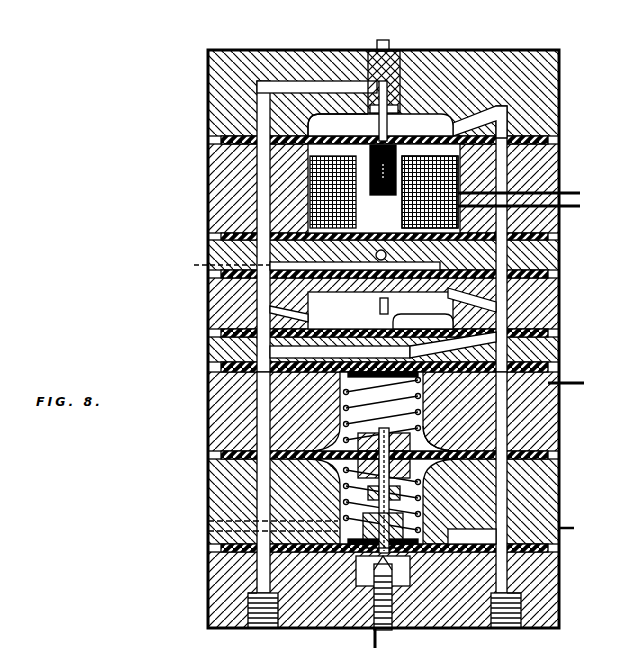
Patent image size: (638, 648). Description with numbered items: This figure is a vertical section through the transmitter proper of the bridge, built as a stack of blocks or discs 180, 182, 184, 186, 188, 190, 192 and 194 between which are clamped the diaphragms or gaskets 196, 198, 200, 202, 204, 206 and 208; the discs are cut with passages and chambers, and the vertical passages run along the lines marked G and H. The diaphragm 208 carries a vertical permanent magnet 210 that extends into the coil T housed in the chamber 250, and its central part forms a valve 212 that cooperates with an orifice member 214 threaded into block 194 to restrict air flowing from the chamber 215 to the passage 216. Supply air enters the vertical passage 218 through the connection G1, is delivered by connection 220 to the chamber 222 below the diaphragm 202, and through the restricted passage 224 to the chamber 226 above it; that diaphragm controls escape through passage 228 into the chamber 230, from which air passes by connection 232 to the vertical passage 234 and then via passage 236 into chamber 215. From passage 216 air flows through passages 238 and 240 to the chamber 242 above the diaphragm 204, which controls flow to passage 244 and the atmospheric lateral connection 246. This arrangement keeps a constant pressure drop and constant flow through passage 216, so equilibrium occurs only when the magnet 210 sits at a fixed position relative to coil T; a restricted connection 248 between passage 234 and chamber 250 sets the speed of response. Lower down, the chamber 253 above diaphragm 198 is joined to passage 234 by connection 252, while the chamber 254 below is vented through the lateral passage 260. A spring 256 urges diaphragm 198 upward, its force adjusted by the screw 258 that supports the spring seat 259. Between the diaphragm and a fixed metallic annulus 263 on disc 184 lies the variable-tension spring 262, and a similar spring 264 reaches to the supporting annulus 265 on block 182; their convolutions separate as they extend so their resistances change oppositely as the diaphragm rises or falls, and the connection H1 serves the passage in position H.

The block 194 is at (552, 82).
The block 192 is at (552, 170).
The block 190 is at (552, 249).
The block 188 is at (552, 295).
The block 186 is at (552, 350).
The block 184 is at (552, 428).
The block 182 is at (552, 482).
The block 180 is at (552, 576).
The diaphragm 208 is at (552, 125).
The diaphragm 206 is at (552, 226).
The diaphragm 204 is at (552, 266).
The diaphragm 202 is at (552, 324).
The diaphragm 200 is at (572, 378).
The diaphragm 198 is at (552, 447).
The diaphragm 196 is at (552, 540).
The passage 240 is at (249, 102).
The vertical passage 218 is at (249, 490).
The passage 238 is at (292, 74).
The restricted connection 248 is at (499, 160).
The vertical passage 234 is at (499, 490).
The passage 236 is at (466, 108).
The orifice member 214 is at (388, 84).
The chamber 215 is at (392, 101).
The permanent magnet 210 is at (380, 125).
The valve 212 is at (338, 125).
The passage 216 is at (375, 42).
The chamber 250 is at (302, 160).
The coil T is at (452, 152).
The chamber 242 is at (420, 258).
The passage 244 is at (379, 247).
The lateral connection 246 is at (218, 265).
The chamber 230 is at (380, 310).
The restricted passage 224 is at (294, 307).
The chamber 226 is at (423, 311).
The passage 228 is at (399, 303).
The connection 232 is at (472, 307).
The connection 220 is at (340, 353).
The chamber 222 is at (453, 347).
The chamber 253 is at (302, 441).
The chamber 254 is at (396, 501).
The connection 252 is at (440, 420).
The fixed metallic annulus 263 is at (354, 382).
The spring 262 is at (354, 410).
The spring 264 is at (312, 472).
The spring 256 is at (332, 505).
The spring seat 259 is at (360, 548).
The supporting annulus 265 is at (455, 548).
The lateral passage 260 is at (200, 528).
The screw 258 is at (383, 622).
The position G is at (263, 620).
The connection G1 is at (242, 606).
The position H is at (506, 620).
The screw H1 is at (552, 612).